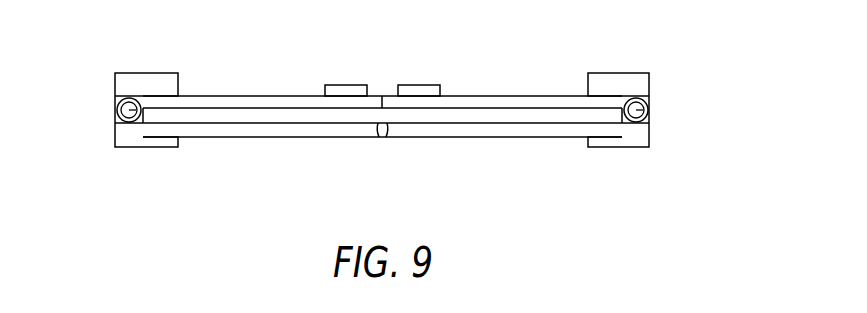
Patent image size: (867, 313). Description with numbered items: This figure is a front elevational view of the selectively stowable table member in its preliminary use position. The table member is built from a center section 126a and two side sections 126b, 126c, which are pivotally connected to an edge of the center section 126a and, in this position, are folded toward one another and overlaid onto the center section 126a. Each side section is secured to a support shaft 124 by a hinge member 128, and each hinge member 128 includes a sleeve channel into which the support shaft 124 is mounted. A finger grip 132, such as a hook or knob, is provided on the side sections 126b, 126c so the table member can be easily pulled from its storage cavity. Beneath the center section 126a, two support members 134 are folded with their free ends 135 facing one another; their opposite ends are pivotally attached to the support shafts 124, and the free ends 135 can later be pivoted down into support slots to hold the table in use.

The support shaft 124 is at (118, 106).
The center section 126a is at (213, 115).
The side section 126b is at (257, 103).
The side section 126c is at (507, 103).
The hinge member 128 is at (143, 73).
The finger grip 132 is at (418, 85).
The support member 134 is at (350, 132).
The free end 135 is at (380, 137).